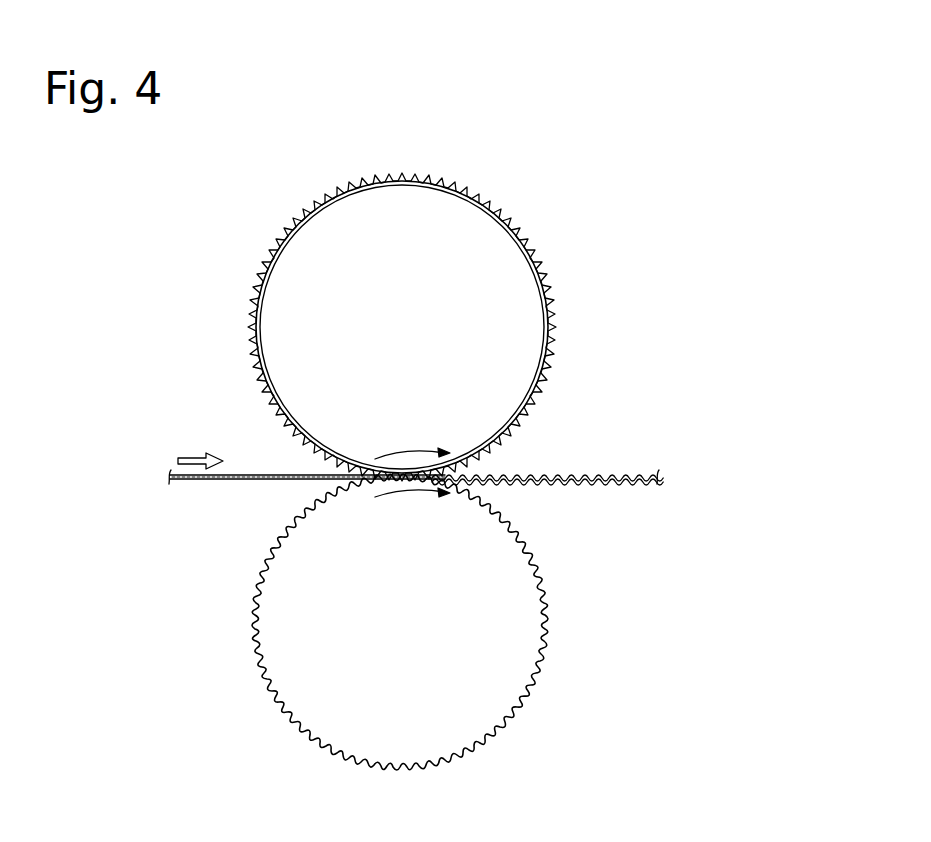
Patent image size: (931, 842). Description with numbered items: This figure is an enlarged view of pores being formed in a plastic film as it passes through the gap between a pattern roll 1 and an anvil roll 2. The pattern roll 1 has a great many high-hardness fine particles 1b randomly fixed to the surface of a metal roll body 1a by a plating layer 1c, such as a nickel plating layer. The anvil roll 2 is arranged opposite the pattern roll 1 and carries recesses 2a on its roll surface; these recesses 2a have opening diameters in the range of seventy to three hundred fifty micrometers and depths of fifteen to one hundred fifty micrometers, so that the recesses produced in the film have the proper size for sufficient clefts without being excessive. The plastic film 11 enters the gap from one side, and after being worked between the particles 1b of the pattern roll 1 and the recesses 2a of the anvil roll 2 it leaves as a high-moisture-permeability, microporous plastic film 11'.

The pattern roll 1 is at (426, 305).
The metal roll body 1a is at (488, 336).
The high-hardness fine particles 1b is at (487, 203).
The plating layer 1c is at (447, 181).
The anvil roll 2 is at (426, 622).
The recesses 2a is at (512, 716).
The plastic film 11 is at (307, 451).
The high-moisture-permeability, microporous plastic film 11' is at (547, 453).